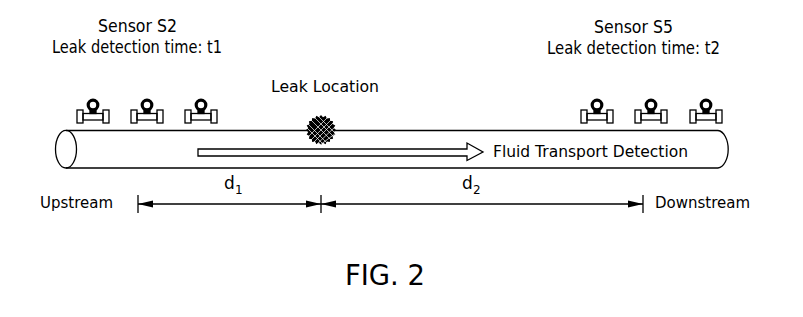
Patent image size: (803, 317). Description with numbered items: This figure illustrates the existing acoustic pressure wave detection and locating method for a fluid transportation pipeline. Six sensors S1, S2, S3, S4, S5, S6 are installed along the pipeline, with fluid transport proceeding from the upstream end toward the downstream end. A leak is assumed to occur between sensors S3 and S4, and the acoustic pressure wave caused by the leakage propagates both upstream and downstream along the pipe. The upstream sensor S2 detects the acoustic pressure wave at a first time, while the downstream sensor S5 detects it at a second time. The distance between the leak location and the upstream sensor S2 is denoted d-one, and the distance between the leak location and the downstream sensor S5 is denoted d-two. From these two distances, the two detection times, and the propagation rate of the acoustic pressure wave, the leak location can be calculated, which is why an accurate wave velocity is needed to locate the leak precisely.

The sensor S1 is at (93, 99).
The upstream sensor S2 is at (147, 99).
The sensor S3 is at (201, 99).
The sensor S4 is at (597, 99).
The downstream sensor S5 is at (651, 99).
The sensor S6 is at (706, 99).